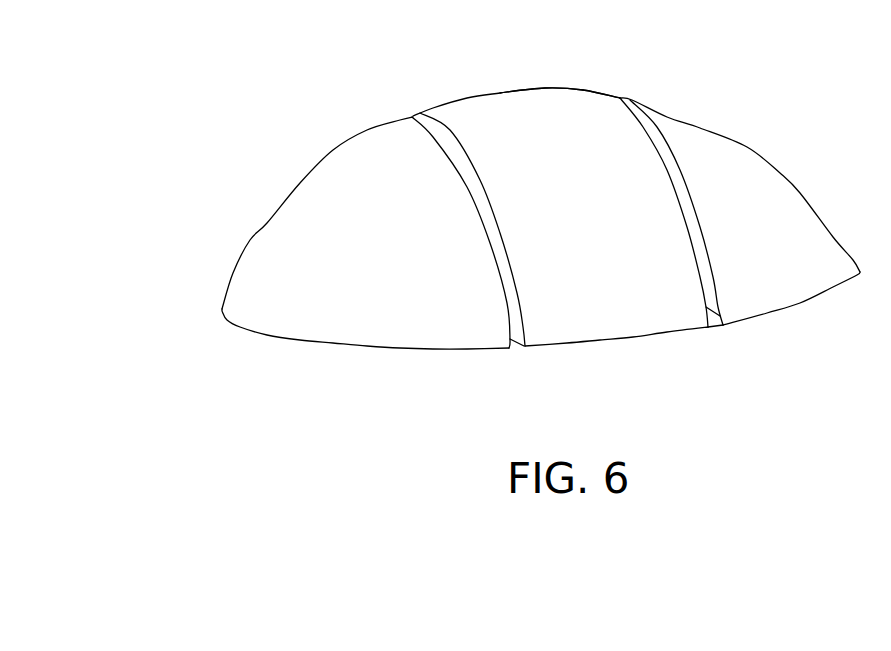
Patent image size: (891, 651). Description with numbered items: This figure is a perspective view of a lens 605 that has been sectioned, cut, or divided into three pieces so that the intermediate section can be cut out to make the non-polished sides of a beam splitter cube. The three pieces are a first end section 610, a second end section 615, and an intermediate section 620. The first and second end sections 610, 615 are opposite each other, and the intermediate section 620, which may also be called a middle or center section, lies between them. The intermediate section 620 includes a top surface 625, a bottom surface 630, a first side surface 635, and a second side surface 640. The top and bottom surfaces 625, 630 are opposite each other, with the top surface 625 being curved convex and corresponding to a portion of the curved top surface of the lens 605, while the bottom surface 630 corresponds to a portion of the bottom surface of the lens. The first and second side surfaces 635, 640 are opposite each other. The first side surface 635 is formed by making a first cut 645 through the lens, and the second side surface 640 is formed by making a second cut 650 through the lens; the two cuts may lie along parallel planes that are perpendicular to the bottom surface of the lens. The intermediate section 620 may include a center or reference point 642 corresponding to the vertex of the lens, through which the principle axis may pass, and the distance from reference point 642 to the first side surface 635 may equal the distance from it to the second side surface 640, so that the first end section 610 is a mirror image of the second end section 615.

The lens 605 is at (160, 94).
The first end section 610 is at (286, 177).
The second end section 615 is at (697, 99).
The intermediate section 620 is at (460, 99).
The top surface 625 is at (591, 78).
The bottom surface 630 is at (628, 355).
The first side surface 635 is at (511, 357).
The second side surface 640 is at (722, 324).
The reference point 642 is at (515, 80).
The first cut 645 is at (520, 320).
The second cut 650 is at (703, 190).